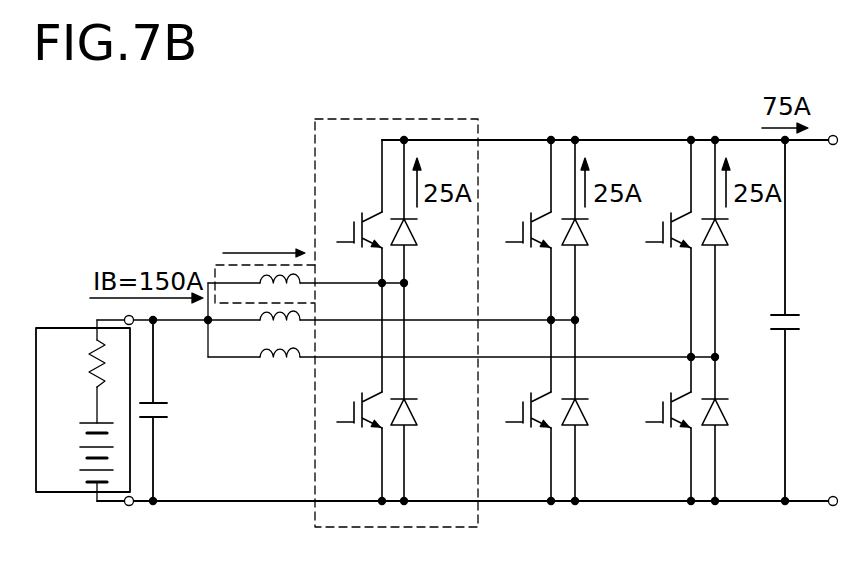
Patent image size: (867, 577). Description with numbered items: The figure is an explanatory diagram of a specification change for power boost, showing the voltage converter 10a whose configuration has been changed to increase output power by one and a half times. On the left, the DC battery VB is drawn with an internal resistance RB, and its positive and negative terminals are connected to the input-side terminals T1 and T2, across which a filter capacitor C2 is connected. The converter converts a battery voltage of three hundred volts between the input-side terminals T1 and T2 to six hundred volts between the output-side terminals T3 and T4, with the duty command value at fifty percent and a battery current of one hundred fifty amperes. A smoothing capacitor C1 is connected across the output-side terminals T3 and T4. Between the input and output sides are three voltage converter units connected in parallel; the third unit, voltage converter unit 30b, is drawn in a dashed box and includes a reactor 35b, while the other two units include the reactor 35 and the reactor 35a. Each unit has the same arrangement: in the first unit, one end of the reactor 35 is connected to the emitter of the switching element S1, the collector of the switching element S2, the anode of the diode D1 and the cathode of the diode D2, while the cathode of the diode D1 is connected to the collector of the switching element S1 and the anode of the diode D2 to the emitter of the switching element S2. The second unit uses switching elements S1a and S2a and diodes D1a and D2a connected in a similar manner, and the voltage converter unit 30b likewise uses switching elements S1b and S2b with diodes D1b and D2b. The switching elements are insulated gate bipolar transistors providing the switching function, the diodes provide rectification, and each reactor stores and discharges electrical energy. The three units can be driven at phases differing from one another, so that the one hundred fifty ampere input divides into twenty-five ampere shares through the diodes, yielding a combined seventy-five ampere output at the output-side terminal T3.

The voltage converter 10a is at (501, 136).
The voltage converter unit 30b is at (453, 112).
The reactor 35 is at (268, 359).
The reactor 35a is at (267, 322).
The reactor 35b is at (302, 276).
The DC battery VB is at (81, 392).
The internal resistance of battery RB is at (73, 363).
The input-side terminal T1 is at (124, 318).
The input-side terminal T2 is at (129, 506).
The output-side terminal T3 is at (833, 145).
The output-side terminal T4 is at (833, 496).
The smoothing capacitor C1 is at (798, 320).
The filter capacitor C2 is at (166, 410).
The switching element S1 is at (668, 203).
The switching element S1a is at (525, 203).
The switching element S1b is at (361, 213).
The switching element S2 is at (666, 392).
The switching element S2a is at (522, 392).
The switching element S2b is at (352, 393).
The diode D1 is at (733, 320).
The diode D1a is at (597, 320).
The diode D1b is at (410, 247).
The diode D2 is at (732, 436).
The diode D2a is at (597, 436).
The diode D2b is at (427, 436).